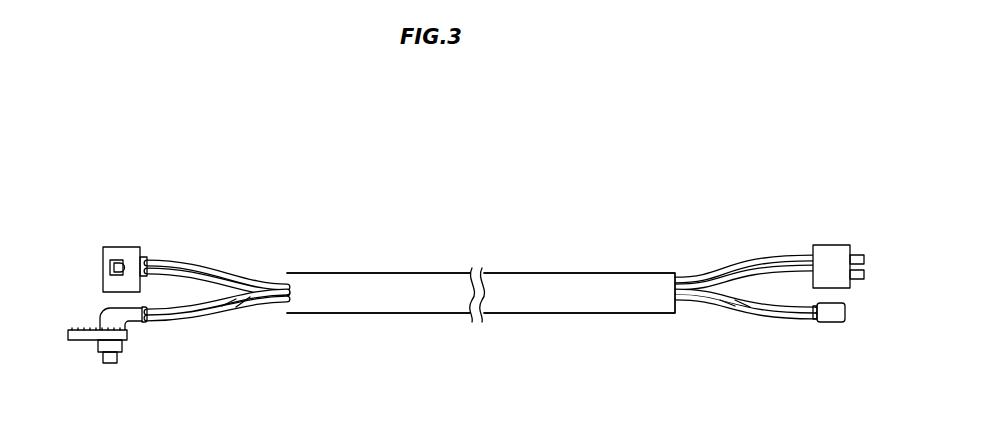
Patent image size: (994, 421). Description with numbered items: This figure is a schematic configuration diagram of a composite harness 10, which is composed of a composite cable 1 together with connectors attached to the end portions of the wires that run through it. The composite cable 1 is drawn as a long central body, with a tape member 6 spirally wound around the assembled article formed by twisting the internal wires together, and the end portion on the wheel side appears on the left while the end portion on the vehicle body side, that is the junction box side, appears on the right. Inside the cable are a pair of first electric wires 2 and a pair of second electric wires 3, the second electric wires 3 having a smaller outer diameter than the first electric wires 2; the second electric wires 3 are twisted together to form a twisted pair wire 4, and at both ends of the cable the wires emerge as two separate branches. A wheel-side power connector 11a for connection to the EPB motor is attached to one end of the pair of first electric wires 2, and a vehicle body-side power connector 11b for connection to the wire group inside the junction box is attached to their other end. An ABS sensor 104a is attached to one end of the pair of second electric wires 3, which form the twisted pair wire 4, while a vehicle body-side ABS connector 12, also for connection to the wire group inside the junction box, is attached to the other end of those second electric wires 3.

The composite harness 10 is at (623, 221).
The composite cable 1 is at (481, 283).
The tape member 6 is at (600, 313).
The first electric wires 2 is at (178, 319).
The second electric wires 3 is at (177, 262).
The twisted pair wire 4 is at (233, 308).
The wheel-side power connector 11a is at (103, 273).
The vehicle body-side power connector 11b is at (865, 273).
The vehicle body-side ABS connector 12 is at (847, 313).
The ABS sensor 104a is at (100, 312).